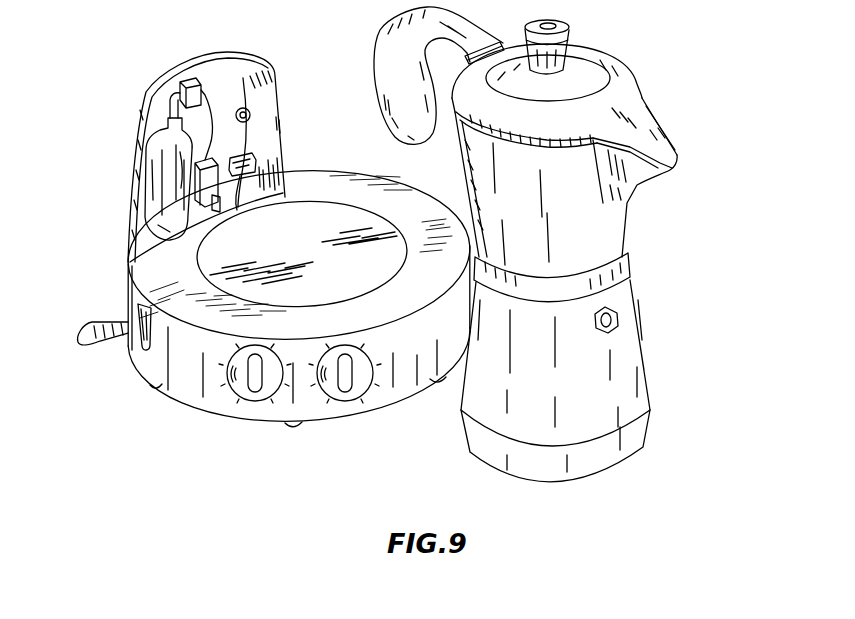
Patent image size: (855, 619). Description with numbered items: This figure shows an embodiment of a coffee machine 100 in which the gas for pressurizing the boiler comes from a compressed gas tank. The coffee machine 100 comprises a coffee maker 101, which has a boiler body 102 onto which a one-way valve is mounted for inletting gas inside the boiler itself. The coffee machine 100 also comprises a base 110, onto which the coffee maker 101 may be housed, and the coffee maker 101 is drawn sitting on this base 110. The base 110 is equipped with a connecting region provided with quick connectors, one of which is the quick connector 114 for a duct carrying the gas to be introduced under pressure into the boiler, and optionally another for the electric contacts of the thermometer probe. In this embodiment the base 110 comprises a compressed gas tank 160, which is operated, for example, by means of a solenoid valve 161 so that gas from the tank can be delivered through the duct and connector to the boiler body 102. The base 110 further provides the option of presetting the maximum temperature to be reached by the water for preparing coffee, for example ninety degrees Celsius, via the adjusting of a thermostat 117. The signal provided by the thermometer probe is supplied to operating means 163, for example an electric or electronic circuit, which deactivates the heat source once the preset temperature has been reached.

The coffee machine 100 is at (260, 484).
The coffee maker 101 is at (652, 60).
The boiler body 102 is at (642, 344).
The base 110 is at (177, 404).
The quick connector 114 is at (248, 104).
The thermostat 117 is at (362, 388).
The compressed gas tank 160 is at (160, 170).
The solenoid valve 161 is at (190, 82).
The operating means 163 is at (200, 187).